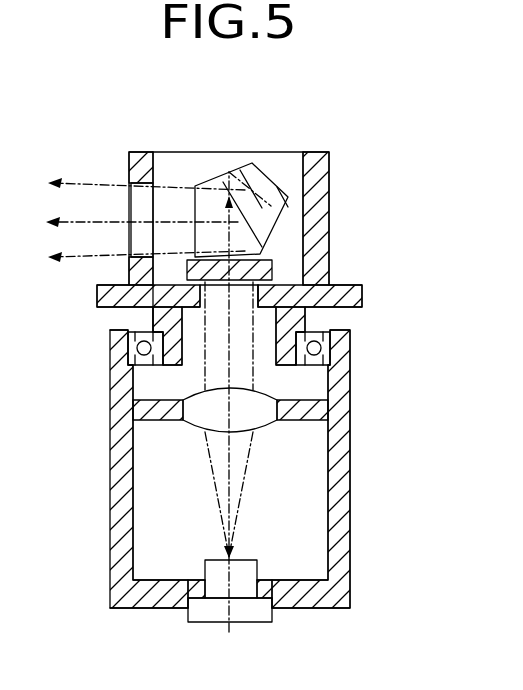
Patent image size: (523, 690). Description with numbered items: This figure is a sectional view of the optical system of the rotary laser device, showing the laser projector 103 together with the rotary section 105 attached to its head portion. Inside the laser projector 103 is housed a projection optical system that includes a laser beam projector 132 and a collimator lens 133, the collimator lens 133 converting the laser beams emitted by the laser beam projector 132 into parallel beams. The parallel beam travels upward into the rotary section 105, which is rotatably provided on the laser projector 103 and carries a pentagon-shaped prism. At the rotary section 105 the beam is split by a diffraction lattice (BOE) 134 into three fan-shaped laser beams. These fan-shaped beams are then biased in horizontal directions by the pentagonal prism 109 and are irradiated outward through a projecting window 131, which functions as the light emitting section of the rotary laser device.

The laser projector 103 is at (354, 534).
The rotary section 105 is at (330, 223).
The pentagonal prism 109 is at (273, 183).
The projecting window 131 is at (135, 210).
The laser beam projector 132 is at (243, 610).
The collimator lens 133 is at (262, 408).
The diffraction lattice (BOE) 134 is at (334, 345).